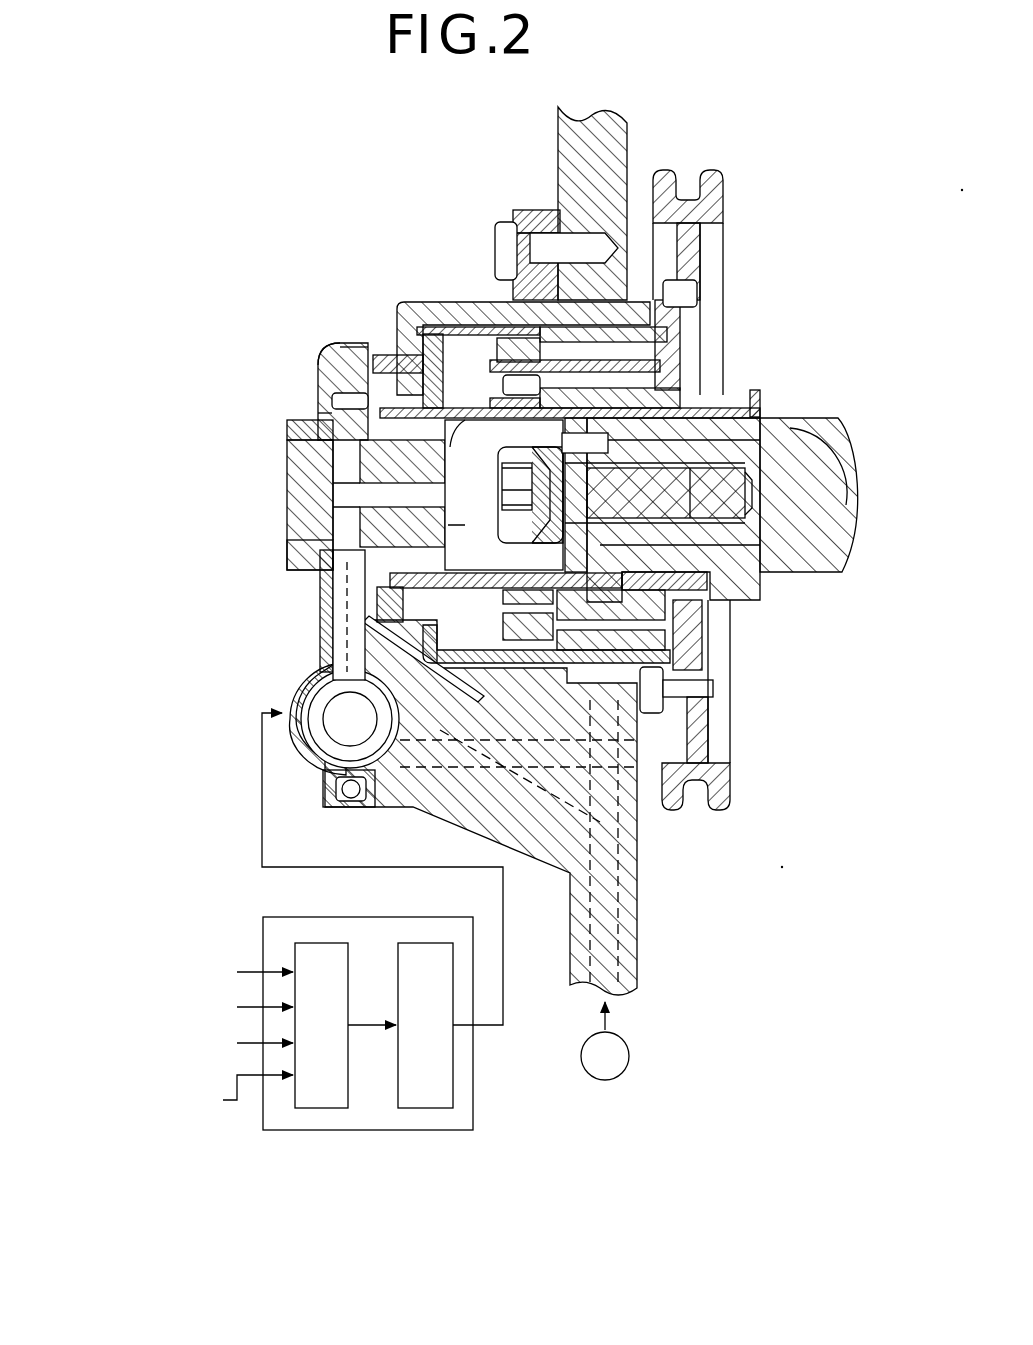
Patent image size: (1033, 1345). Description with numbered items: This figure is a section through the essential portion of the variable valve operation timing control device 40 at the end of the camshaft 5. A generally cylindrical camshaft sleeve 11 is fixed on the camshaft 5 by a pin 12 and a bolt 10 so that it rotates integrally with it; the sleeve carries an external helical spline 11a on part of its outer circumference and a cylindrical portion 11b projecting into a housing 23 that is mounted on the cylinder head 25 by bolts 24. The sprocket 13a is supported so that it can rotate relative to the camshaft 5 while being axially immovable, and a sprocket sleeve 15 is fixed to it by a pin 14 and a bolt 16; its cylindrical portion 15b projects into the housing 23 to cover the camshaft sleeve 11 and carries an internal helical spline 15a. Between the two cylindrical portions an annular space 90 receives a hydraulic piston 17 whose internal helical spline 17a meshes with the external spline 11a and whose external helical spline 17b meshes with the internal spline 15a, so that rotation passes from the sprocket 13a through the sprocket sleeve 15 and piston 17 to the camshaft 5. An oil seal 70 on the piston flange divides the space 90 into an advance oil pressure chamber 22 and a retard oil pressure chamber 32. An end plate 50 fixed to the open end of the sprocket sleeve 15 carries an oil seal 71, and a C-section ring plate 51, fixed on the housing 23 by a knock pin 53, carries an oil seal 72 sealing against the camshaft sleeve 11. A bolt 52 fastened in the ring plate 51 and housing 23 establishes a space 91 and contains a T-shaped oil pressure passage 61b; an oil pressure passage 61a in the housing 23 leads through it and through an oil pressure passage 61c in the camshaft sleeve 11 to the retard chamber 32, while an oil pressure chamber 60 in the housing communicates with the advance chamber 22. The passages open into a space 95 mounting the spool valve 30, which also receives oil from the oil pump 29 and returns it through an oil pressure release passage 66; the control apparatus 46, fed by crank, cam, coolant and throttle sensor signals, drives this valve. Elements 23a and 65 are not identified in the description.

The camshaft 5 is at (830, 432).
The bolt 10 is at (770, 553).
The camshaft sleeve 11 is at (705, 377).
The external helical spline 11a is at (505, 340).
The cylindrical portion 11b is at (390, 365).
The pin 12 is at (588, 445).
The sprocket 13a is at (725, 200).
The pin 14 is at (690, 296).
The sprocket sleeve 15 is at (617, 373).
The internal helical spline 15a is at (640, 292).
The cylindrical portion 15b is at (452, 357).
The bolt 16 is at (700, 688).
The hydraulic piston 17 is at (470, 330).
The internal helical spline 17a is at (700, 350).
The external helical spline 17b is at (700, 325).
The advance oil pressure chamber 22 is at (410, 320).
The housing 23 is at (345, 365).
The rotor flange 23a is at (545, 212).
The bolts 24 is at (507, 222).
The cylinder head 25 is at (580, 150).
The oil pump 29 is at (630, 1057).
The spool valve 30 is at (330, 745).
The retard oil pressure chamber 32 is at (525, 245).
The variable valve operation timing control device 40 is at (312, 335).
The control apparatus 46 is at (370, 1130).
The end plate 50 is at (315, 365).
The ring plate 51 is at (318, 400).
The bolt 52 is at (310, 462).
The knock pin 53 is at (340, 380).
The oil pressure chamber 60 is at (345, 585).
The oil pressure passage 61a is at (320, 563).
The oil pressure passage 61b is at (355, 495).
The oil pressure passage 61c is at (730, 397).
The oil passage 65 is at (605, 905).
The oil pressure release passage 66 is at (607, 753).
The oil seal 70 is at (473, 345).
The oil seal 71 is at (352, 350).
The oil seal 72 is at (335, 400).
The annular space 90 is at (295, 437).
The space 91 is at (465, 525).
The space 95 is at (305, 685).